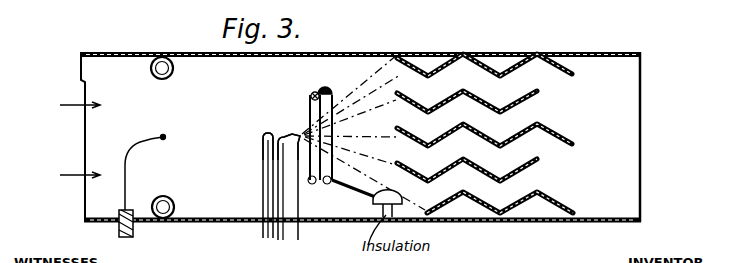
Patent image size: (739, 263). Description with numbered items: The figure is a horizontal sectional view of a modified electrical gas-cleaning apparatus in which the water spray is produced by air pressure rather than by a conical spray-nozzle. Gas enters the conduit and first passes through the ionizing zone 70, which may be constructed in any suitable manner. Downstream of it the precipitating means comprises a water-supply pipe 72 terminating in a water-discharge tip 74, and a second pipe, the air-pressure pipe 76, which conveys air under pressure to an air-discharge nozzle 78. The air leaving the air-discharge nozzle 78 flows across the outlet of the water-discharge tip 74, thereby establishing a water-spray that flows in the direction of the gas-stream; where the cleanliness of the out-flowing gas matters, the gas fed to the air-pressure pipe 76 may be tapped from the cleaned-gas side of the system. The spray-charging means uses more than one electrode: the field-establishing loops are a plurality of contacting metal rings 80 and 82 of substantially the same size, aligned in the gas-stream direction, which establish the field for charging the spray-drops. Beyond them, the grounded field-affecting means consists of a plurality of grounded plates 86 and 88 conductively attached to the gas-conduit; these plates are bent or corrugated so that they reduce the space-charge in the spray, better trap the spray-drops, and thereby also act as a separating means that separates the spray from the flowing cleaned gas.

The ionizing zone 70 is at (193, 120).
The water-supply pipe 72 is at (303, 179).
The water-discharge tip 74 is at (283, 134).
The air-pressure pipe 76 is at (253, 185).
The air-discharge nozzle 78 is at (266, 133).
The contacting metal ring 80 is at (326, 92).
The contacting metal ring 82 is at (312, 94).
The grounded plate 86 is at (574, 74).
The grounded plate 88 is at (540, 92).